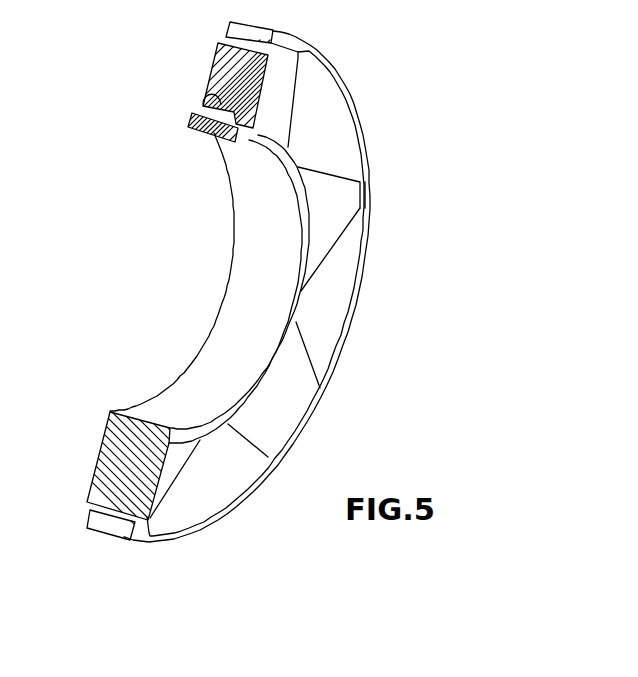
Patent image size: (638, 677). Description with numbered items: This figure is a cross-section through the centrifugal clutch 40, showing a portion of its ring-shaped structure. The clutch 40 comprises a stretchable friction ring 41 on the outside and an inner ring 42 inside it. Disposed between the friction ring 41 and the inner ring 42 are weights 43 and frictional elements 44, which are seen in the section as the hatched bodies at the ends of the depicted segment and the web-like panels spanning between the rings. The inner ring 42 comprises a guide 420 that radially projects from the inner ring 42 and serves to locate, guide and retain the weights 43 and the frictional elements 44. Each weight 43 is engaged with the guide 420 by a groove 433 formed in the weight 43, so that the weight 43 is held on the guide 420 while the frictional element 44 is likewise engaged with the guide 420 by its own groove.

The clutch 40 is at (294, 302).
The stretchable friction ring 41 is at (335, 68).
The inner ring 42 is at (258, 212).
The weight 43 is at (217, 302).
The frictional element 44 is at (330, 130).
The guide 420 is at (203, 102).
The groove 433 is at (222, 80).